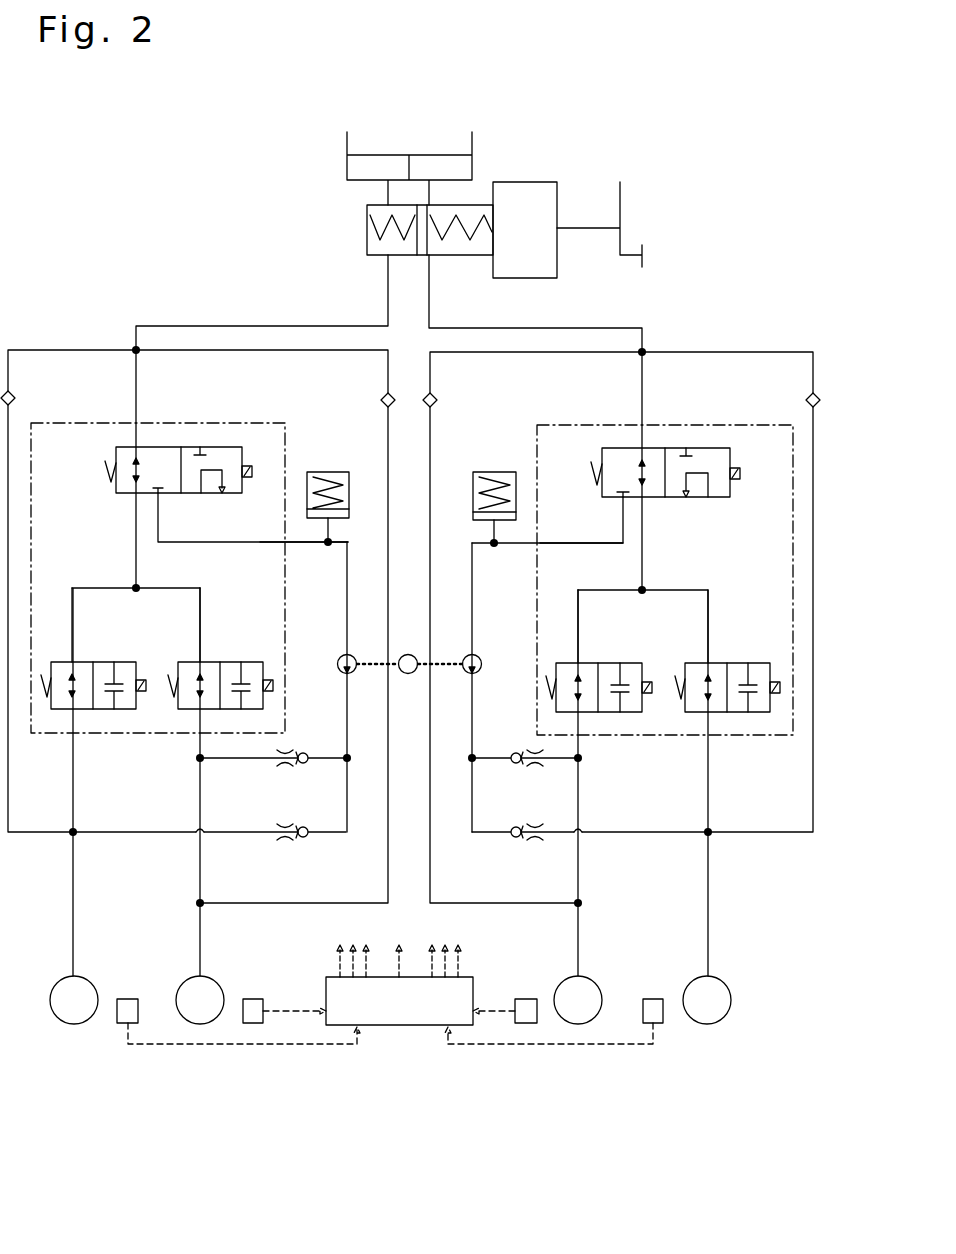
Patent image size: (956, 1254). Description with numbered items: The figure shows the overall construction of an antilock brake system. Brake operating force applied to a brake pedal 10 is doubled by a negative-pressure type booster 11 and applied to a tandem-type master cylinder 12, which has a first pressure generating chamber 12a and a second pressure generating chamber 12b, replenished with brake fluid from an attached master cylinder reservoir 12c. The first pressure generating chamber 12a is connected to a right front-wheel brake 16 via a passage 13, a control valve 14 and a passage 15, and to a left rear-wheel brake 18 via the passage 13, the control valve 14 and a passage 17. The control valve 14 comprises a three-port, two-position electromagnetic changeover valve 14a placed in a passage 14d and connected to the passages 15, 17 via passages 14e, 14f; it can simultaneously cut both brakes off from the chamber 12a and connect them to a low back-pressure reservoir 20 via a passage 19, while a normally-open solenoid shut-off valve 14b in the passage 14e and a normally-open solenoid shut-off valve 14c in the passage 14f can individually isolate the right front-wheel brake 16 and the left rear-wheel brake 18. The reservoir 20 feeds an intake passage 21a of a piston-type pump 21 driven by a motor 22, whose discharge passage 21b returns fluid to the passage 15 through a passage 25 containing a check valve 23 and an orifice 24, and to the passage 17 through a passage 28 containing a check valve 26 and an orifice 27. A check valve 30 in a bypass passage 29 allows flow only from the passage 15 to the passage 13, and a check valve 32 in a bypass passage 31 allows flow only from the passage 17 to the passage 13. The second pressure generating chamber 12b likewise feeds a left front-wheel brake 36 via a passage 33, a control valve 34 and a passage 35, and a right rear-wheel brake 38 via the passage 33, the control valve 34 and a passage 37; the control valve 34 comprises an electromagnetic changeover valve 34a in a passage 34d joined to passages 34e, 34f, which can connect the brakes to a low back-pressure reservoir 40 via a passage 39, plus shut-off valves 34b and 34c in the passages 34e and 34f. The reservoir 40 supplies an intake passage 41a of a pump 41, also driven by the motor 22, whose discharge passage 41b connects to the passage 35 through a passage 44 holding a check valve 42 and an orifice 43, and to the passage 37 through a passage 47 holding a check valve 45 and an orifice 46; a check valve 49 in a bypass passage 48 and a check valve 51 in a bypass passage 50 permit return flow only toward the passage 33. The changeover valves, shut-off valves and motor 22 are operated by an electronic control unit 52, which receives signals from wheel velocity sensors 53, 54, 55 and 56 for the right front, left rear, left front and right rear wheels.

The brake pedal 10 is at (628, 198).
The negative-pressure type booster 11 is at (533, 172).
The tandem-type master cylinder 12 is at (360, 224).
The first pressure generating chamber 12a is at (453, 258).
The second pressure generating chamber 12b is at (372, 246).
The master cylinder reservoir 12c is at (343, 155).
The passage 13 is at (598, 320).
The control valve 14 is at (696, 422).
The three-port, two-position electromagnetic changeover valve 14a is at (735, 512).
The two-port, two-position normally-open solenoid shut-off valve 14b is at (754, 656).
The two-port, two-position normally-open solenoid shut-off valve 14c is at (614, 656).
The passage 14d is at (652, 550).
The passage 14e is at (720, 580).
The passage 14f is at (600, 596).
The passage 15 is at (716, 788).
The right front-wheel brake 16 is at (740, 992).
The passage 17 is at (588, 788).
The left rear-wheel brake 18 is at (604, 990).
The passage 19 is at (563, 536).
The low back-pressure reservoir 20 is at (496, 468).
The pump 21 is at (483, 661).
The intake passage 21a is at (478, 600).
The discharge passage 21b is at (480, 706).
The motor 22 is at (408, 652).
The check valve 23 is at (512, 844).
The orifice 24 is at (538, 844).
The passage 25 is at (468, 842).
The check valve 26 is at (512, 770).
The orifice 27 is at (538, 770).
The passage 28 is at (492, 752).
The bypass passage 29 is at (718, 345).
The check valve 30 is at (806, 400).
The bypass passage 31 is at (519, 360).
The check valve 32 is at (438, 400).
The passage 33 is at (243, 318).
The control valve 34 is at (174, 420).
The three-port, two-position electromagnetic changeover valve 34a is at (110, 470).
The two-port, two-position normally-open solenoid shut-off valve 34b is at (108, 652).
The two-port, two-position normally-open solenoid shut-off valve 34c is at (176, 654).
The passage 34d is at (130, 526).
The passage 34e is at (92, 574).
The passage 34f is at (212, 602).
The passage 35 is at (66, 788).
The left front-wheel brake 36 is at (98, 990).
The passage 37 is at (193, 788).
The right rear-wheel brake 38 is at (226, 988).
The passage 39 is at (265, 536).
The low back-pressure reservoir 40 is at (338, 468).
The pump 41 is at (337, 661).
The intake passage 41a is at (344, 608).
The discharge passage 41b is at (342, 708).
The check valve 42 is at (306, 844).
The orifice 43 is at (282, 844).
The passage 44 is at (342, 840).
The check valve 45 is at (306, 770).
The orifice 46 is at (282, 770).
The passage 47 is at (322, 752).
The bypass passage 48 is at (62, 343).
The check valve 49 is at (16, 398).
The bypass passage 50 is at (316, 372).
The check valve 51 is at (380, 400).
The electronic control unit 52 is at (400, 1030).
The wheel velocity sensor 53 is at (668, 1028).
The wheel velocity sensor 54 is at (518, 998).
The wheel velocity sensor 55 is at (117, 1028).
The wheel velocity sensor 56 is at (272, 996).